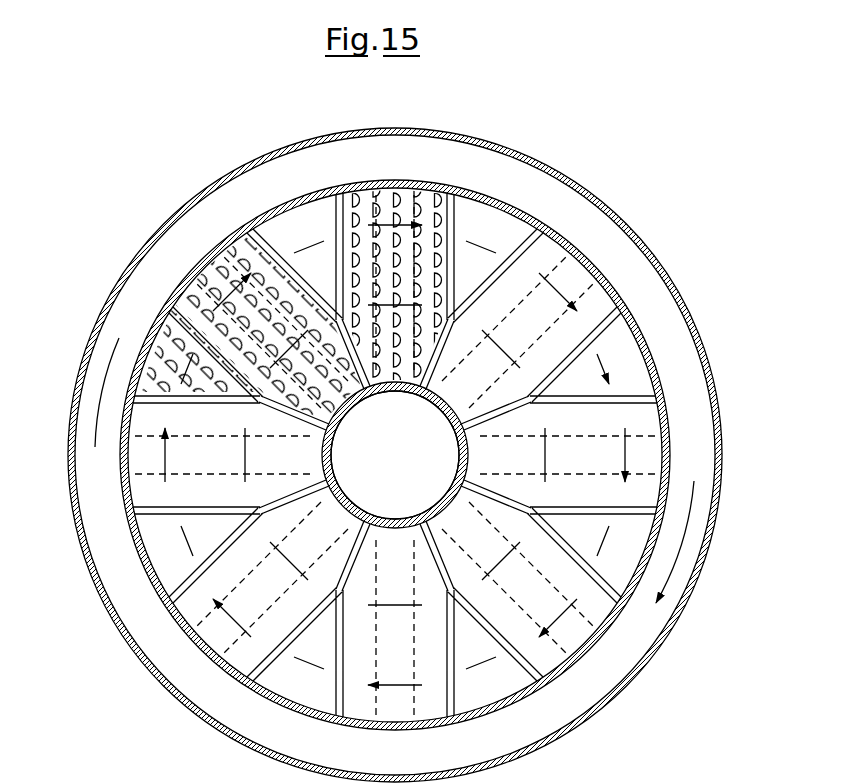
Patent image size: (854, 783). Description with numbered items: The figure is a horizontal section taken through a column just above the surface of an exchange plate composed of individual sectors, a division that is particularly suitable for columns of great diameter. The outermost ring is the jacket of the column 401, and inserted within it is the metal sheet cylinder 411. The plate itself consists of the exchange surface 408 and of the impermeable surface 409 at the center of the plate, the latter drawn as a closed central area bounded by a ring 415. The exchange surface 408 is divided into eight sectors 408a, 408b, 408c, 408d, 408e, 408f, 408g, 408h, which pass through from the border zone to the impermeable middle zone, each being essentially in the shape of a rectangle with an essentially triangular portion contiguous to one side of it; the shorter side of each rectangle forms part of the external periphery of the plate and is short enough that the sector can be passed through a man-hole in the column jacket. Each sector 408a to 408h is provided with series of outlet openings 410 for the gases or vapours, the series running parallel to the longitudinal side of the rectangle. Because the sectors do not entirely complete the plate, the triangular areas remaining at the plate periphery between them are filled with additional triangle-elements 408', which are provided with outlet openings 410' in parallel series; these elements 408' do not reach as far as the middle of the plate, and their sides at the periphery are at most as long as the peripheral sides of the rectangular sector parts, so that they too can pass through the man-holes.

The jacket of the column 401 is at (192, 205).
The exchange surface 408 is at (394, 455).
The triangle-elements 408' is at (387, 431).
The sector 408a is at (140, 492).
The sector 408b is at (225, 272).
The sector 408c is at (410, 194).
The sector 408d is at (620, 270).
The sector 408e is at (650, 427).
The sector 408f is at (542, 658).
The sector 408g is at (428, 707).
The sector 408h is at (236, 653).
The impermeable surface 409 is at (415, 422).
The outlet openings 410 is at (428, 285).
The outlet openings 410' is at (200, 369).
The metal sheet cylinder 411 is at (603, 627).
The hub 415 is at (330, 448).